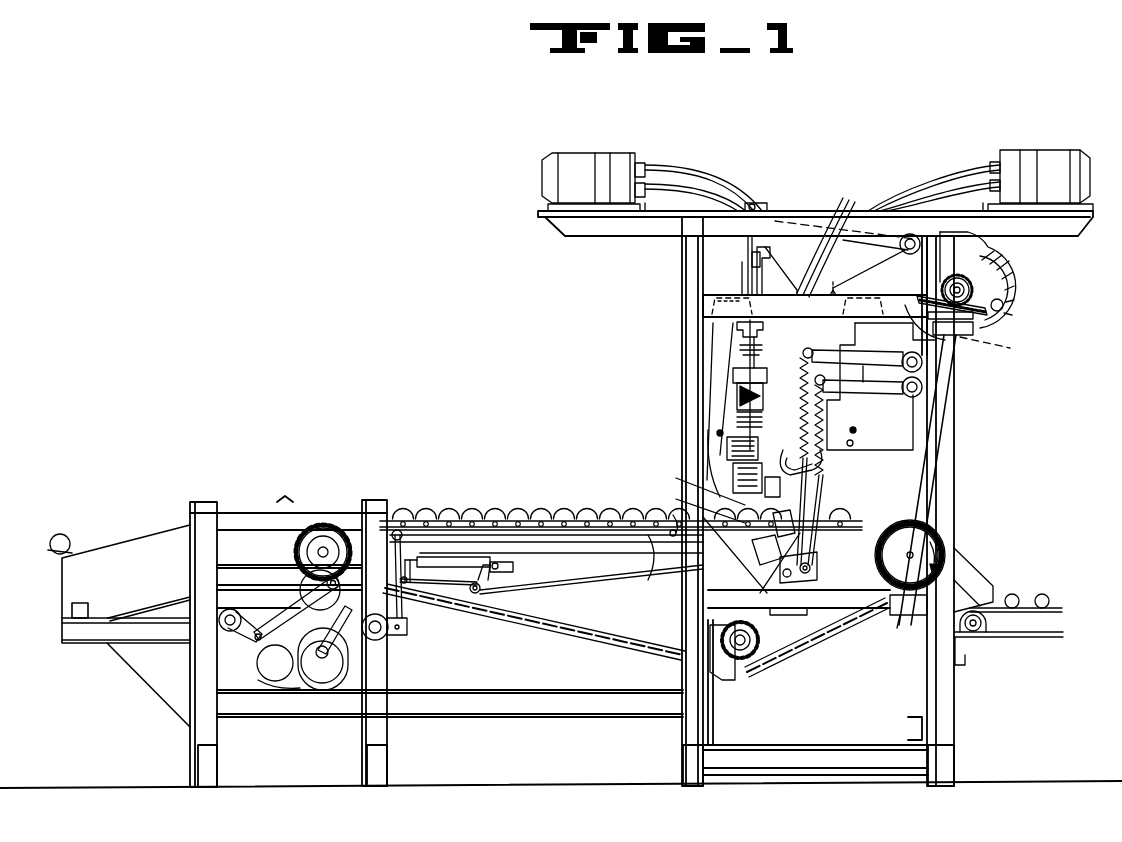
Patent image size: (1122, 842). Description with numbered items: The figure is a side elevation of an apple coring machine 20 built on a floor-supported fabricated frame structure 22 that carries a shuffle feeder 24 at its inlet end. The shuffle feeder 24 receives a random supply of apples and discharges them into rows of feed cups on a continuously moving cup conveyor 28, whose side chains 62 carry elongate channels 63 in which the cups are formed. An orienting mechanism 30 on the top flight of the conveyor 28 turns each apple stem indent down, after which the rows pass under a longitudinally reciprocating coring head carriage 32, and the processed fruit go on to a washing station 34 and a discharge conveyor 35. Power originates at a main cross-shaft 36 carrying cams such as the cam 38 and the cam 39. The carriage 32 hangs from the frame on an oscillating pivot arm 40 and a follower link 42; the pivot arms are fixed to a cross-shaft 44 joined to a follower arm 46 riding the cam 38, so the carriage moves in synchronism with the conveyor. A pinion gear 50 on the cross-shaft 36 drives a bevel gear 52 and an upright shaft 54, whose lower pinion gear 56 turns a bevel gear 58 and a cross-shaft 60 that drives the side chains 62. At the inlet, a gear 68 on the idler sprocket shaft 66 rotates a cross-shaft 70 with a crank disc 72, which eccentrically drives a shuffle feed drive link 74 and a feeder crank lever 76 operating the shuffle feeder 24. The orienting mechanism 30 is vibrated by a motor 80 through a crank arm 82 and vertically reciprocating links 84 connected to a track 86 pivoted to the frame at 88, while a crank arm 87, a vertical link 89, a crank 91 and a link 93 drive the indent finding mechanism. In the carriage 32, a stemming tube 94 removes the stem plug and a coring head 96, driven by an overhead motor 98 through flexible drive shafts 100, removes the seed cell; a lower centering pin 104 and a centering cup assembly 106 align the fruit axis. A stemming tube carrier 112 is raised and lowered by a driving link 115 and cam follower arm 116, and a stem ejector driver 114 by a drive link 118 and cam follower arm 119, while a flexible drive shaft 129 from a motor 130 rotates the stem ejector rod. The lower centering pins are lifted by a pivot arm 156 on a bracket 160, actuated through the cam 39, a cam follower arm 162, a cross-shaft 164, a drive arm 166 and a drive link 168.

The apple coring machine 20 is at (438, 326).
The frame structure 22 is at (510, 712).
The shuffle feeder 24 is at (132, 540).
The cup conveyor 28 is at (436, 512).
The orienting mechanism 30 is at (490, 592).
The coring head carriage 32 is at (735, 396).
The washing station 34 is at (845, 492).
The discharge conveyor 35 is at (1050, 640).
The main cross-shaft 36 is at (975, 290).
The cam 38 is at (980, 246).
The cam 39 is at (1012, 270).
The oscillating pivot arm 40 is at (852, 328).
The follower link 42 is at (735, 328).
The cross-shaft 44 is at (846, 286).
The follower arm 46 is at (880, 285).
The pinion gear 50 is at (1003, 306).
The bevel gear 52 is at (990, 318).
The upright shaft 54 is at (930, 432).
The pinion gear 56 is at (905, 615).
The bevel gear 58 is at (946, 549).
The cross-shaft 60 is at (945, 531).
The cup conveyor side chains 62 is at (458, 528).
The elongate channel 63 is at (524, 510).
The idler sprocket shaft 66 is at (318, 552).
The gear 68 is at (290, 535).
The cross-shaft 70 is at (326, 585).
The crank disc 72 is at (326, 602).
The shuffle feed drive link 74 is at (258, 655).
The feeder crank lever 76 is at (250, 622).
The motor 80 is at (272, 676).
The crank arm 82 is at (345, 637).
The vertically reciprocating link 84 is at (400, 622).
The track 86 is at (648, 565).
The crank arm 87 is at (904, 396).
The pivot 88 is at (676, 514).
The vertical link 89 is at (814, 548).
The crank 91 is at (806, 568).
The link 93 is at (598, 585).
The stemming tube 94 is at (735, 418).
The coring head 96 is at (818, 470).
The overhead motor 98 is at (1052, 148).
The flexible drive shaft 100 is at (890, 195).
The lower centering pin 104 is at (752, 554).
The centering cup assembly 106 is at (730, 492).
The stemming tube carrier 112 is at (730, 385).
The stem ejector driver 114 is at (748, 277).
The driving link 115 is at (764, 240).
The cam follower arm 116 is at (790, 208).
The drive link 118 is at (750, 259).
The cam follower arm 119 is at (748, 201).
The flexible drive shaft 129 is at (708, 168).
The motor 130 is at (575, 151).
The pivot arm 156 is at (799, 583).
The bracket 160 is at (735, 503).
The cam follower arm 162 is at (1014, 349).
The cross-shaft 164 is at (924, 365).
The drive arm 166 is at (828, 350).
The drive link 168 is at (798, 400).